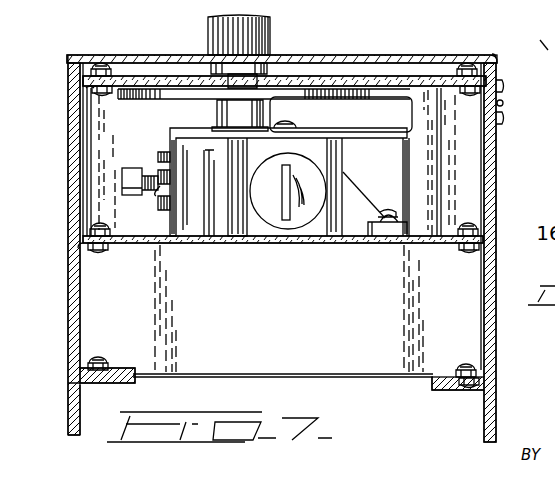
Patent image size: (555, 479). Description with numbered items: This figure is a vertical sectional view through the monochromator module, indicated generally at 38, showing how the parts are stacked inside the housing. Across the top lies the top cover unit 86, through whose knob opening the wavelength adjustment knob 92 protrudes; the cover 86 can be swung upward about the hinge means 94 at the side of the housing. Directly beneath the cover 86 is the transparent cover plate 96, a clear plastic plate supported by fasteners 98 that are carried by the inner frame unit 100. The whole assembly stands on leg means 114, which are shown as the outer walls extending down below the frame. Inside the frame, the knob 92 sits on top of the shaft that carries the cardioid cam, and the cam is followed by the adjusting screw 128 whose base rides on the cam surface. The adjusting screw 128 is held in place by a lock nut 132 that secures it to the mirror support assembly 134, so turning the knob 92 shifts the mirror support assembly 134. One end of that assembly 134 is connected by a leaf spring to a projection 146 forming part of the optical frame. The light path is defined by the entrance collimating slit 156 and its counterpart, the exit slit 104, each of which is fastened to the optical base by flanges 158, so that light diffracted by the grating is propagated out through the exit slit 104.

The control unit assembly 38 is at (549, 43).
The top cover unit 86 is at (153, 56).
The wavelength adjustment knob 92 is at (262, 43).
The hinge means 94 is at (503, 103).
The transparent cover plate 96 is at (330, 81).
The fasteners 98 is at (105, 62).
The inner frame unit 100 is at (268, 240).
The exit slit 104 is at (305, 150).
The leg means 114 is at (74, 432).
The adjusting screw 128 is at (131, 166).
The lock nut 132 is at (160, 203).
The mirror support assembly 134 is at (171, 140).
The projection 146 is at (218, 200).
The entrance collimating slit 156 is at (407, 185).
The flanges 158 is at (380, 225).